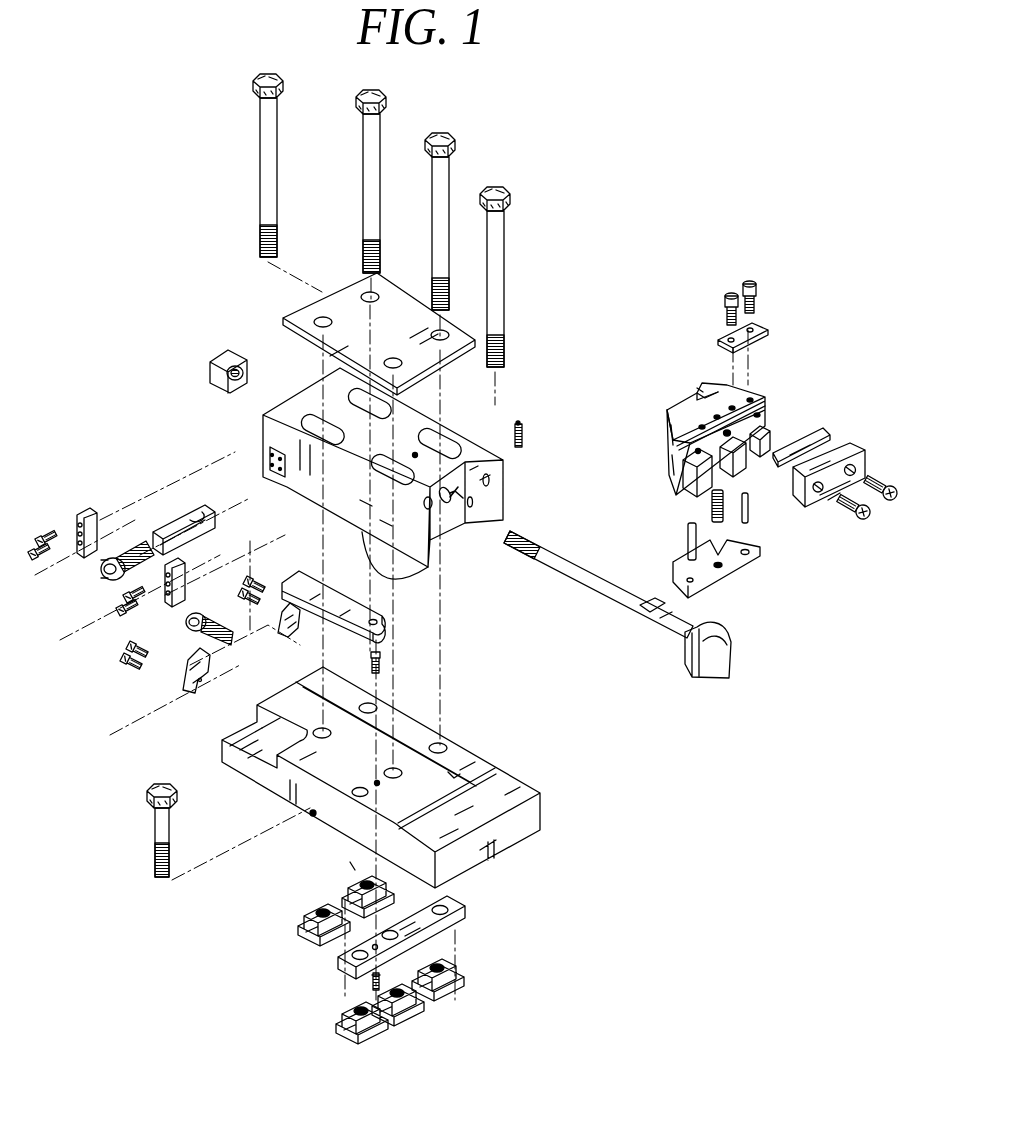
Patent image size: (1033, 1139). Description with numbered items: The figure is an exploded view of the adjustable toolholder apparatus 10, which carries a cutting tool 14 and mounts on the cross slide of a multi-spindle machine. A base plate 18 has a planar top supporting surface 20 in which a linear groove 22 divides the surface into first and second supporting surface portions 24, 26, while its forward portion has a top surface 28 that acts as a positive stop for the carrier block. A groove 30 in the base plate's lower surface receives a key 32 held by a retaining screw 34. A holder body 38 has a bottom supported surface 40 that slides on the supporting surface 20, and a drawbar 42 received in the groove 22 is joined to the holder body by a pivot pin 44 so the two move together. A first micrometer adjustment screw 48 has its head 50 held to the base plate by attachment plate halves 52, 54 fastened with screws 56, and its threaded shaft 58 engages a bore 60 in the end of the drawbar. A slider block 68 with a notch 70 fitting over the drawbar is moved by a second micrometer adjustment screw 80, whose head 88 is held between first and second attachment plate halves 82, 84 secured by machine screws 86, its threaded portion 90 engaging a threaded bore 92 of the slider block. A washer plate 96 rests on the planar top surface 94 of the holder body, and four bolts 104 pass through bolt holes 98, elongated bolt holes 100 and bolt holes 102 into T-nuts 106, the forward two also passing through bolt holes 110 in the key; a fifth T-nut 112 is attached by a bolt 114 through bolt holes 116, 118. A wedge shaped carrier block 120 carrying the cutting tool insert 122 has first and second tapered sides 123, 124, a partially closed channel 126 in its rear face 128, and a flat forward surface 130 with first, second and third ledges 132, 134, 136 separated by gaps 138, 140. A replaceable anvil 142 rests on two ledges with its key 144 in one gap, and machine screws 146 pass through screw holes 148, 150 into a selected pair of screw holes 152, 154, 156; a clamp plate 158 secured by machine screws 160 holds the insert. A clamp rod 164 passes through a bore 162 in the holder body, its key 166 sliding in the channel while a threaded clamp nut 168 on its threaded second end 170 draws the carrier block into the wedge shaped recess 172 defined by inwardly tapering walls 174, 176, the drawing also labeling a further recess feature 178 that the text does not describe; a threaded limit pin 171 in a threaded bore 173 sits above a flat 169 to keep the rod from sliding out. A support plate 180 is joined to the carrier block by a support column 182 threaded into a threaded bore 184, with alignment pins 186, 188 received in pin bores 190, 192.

The adjustable toolholder apparatus 10 is at (579, 196).
The cutting tool 14 is at (830, 431).
The base plate 18 is at (409, 774).
The planar top supporting surface 20 is at (402, 785).
The linear groove 22 is at (470, 780).
The first supporting surface portion 24 is at (310, 848).
The second supporting surface portion 26 is at (470, 755).
The top surface 28 is at (512, 790).
The groove 30 is at (350, 860).
The key 32 is at (393, 963).
The retaining screw 34 is at (375, 978).
The holder body 38 is at (384, 448).
The bottom supported surface 40 is at (380, 565).
The drawbar 42 is at (333, 581).
The pivot pin 44 is at (382, 670).
The first micrometer adjustment screw 48 is at (213, 607).
The head 50 is at (213, 607).
The attachment plate half 52 is at (190, 690).
The attachment plate half 54 is at (280, 634).
The screws 56 is at (245, 592).
The threaded shaft 58 is at (226, 630).
The bore 60 is at (350, 595).
The slider block 68 is at (212, 521).
The notch 70 is at (210, 522).
The second micrometer adjustment screw 80 is at (80, 599).
The first attachment plate half 82 is at (88, 512).
The second attachment plate half 84 is at (168, 605).
The machine screws 86 is at (33, 553).
The head 88 is at (108, 580).
The threaded portion 90 is at (88, 570).
The threaded bore 92 is at (132, 552).
The planar top surface 94 is at (384, 479).
The washer plate 96 is at (381, 318).
The bolt holes 98 is at (323, 318).
The elongated bolt holes 100 is at (320, 430).
The bolt holes 102 is at (328, 730).
The bolts 104 is at (363, 165).
The T-nuts 106 is at (298, 925).
The bolt holes 110 is at (445, 915).
The fifth T-nut 112 is at (340, 1038).
The bolt 114 is at (172, 825).
The bolt hole 116 is at (370, 792).
The bolt hole 118 is at (375, 975).
The wedge shaped carrier block 120 is at (722, 464).
The cutting tool insert 122 is at (805, 440).
The first tapered side 123 is at (683, 470).
The second tapered side 124 is at (700, 424).
The partially closed channel 126 is at (695, 400).
The rear face 128 is at (668, 415).
The flat forward surface 130 is at (740, 410).
The first ledge 132 is at (720, 465).
The second ledge 134 is at (752, 398).
The third ledge 136 is at (762, 416).
The gap 138 is at (695, 453).
The gap 140 is at (752, 452).
The anvil 142 is at (848, 495).
The key 144 is at (830, 500).
The machine screws 146 is at (868, 518).
The screw hole 148 is at (820, 495).
The screw hole 150 is at (856, 468).
The screw hole 152 is at (712, 505).
The screw hole 154 is at (725, 430).
The screw hole 156 is at (735, 410).
The clamp plate 158 is at (755, 328).
The machine screws 160 is at (749, 282).
The bore 162 is at (447, 507).
The clamp rod 164 is at (621, 612).
The key 166 is at (710, 660).
The threaded clamp nut 168 is at (218, 362).
The flat 169 is at (645, 610).
The threaded second end 170 is at (540, 545).
The threaded limit pin 171 is at (525, 424).
The wedge shaped recess 172 is at (458, 500).
The threaded bore 173 is at (415, 452).
The first inwardly tapering wall 174 is at (423, 505).
The second inwardly tapering wall 176 is at (490, 482).
The hole 178 is at (475, 500).
The support plate 180 is at (750, 555).
The support column 182 is at (690, 540).
The threaded bore 184 is at (722, 568).
The alignment pin 186 is at (693, 583).
The alignment pin 188 is at (750, 514).
The pin bore 190 is at (668, 620).
The pin bore 192 is at (740, 585).